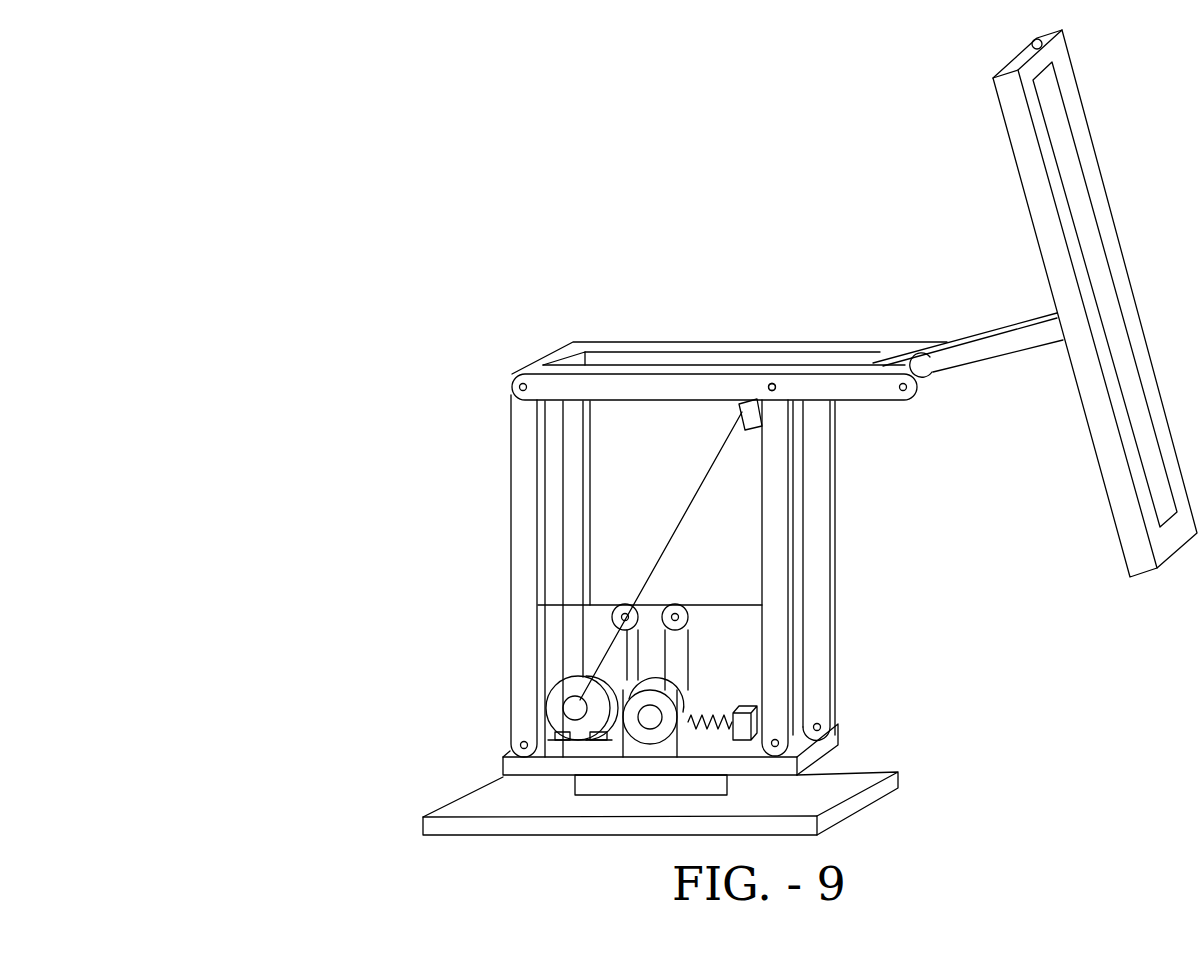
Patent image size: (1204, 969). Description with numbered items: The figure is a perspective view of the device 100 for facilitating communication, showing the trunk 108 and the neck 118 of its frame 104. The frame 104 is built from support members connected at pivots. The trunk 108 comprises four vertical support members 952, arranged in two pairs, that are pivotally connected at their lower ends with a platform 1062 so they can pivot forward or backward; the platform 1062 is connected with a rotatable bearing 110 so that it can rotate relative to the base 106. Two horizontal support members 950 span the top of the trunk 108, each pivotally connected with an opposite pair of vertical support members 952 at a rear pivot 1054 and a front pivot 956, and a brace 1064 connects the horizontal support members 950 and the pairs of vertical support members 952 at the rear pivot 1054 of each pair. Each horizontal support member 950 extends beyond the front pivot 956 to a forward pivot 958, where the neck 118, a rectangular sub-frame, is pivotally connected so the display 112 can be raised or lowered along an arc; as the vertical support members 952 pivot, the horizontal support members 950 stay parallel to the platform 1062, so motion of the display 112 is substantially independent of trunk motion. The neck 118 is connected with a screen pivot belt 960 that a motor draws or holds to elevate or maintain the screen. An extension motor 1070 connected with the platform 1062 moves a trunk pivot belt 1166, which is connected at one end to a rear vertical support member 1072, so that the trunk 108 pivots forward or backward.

The device 100 is at (286, 293).
The frame 104 is at (590, 303).
The base 106 is at (485, 798).
The trunk 108 is at (480, 625).
The rotatable bearing 110 is at (700, 782).
The display 112 is at (1012, 50).
The neck 118 is at (977, 353).
The horizontal support member 950 is at (671, 385).
The vertical support members 952 is at (572, 555).
The front pivot 956 is at (772, 385).
The forward pivot 958 is at (903, 384).
The screen pivot belt 960 is at (690, 500).
The rear pivot 1054 is at (510, 397).
The platform 1062 is at (503, 752).
The brace 1064 is at (557, 358).
The extension motor 1070 is at (650, 735).
The rear vertical support member 1072 is at (528, 505).
The trunk pivot belt 1166 is at (720, 605).